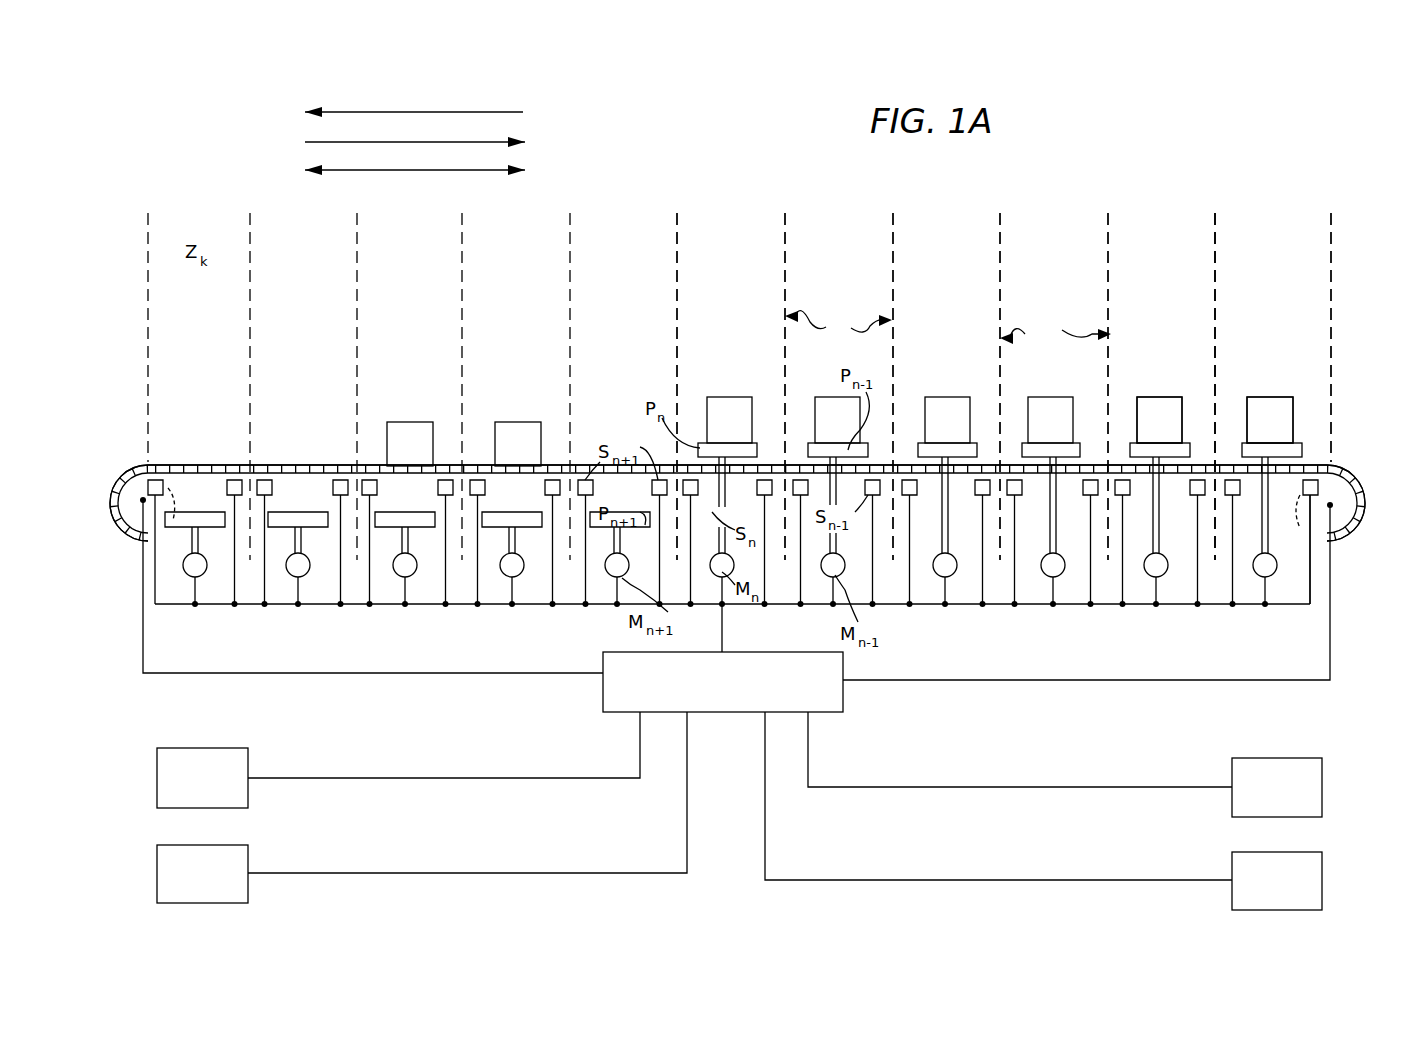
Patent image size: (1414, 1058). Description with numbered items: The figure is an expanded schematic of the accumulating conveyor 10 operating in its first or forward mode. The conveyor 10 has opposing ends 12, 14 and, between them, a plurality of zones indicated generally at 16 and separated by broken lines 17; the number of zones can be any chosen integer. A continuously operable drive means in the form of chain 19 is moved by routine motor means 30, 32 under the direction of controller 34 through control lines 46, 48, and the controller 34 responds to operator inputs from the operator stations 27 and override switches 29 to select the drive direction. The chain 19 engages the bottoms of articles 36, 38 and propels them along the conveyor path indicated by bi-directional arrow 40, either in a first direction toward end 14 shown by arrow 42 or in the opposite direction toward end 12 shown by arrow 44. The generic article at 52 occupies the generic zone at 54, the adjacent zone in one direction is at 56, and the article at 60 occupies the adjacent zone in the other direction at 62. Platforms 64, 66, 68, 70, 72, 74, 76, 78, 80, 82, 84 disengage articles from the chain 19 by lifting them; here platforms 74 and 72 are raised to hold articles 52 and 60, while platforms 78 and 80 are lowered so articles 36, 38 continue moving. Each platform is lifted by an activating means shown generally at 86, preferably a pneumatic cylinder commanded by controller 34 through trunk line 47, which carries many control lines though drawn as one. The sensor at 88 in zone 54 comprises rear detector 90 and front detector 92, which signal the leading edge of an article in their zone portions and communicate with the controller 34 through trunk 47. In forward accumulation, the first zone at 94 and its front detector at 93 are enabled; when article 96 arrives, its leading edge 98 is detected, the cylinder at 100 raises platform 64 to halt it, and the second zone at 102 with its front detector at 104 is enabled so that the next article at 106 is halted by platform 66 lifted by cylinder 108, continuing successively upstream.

The accumulating conveyor 10 is at (797, 185).
The end 12 is at (112, 485).
The end 14 is at (1370, 484).
The zones 16 is at (963, 230).
The broken lines 17 is at (948, 327).
The chain 19 is at (310, 465).
The operator station 27 is at (157, 870).
The override switch 29 is at (157, 786).
The motor means 30 is at (135, 505).
The motor means 32 is at (1362, 520).
The controller 34 is at (843, 663).
The article 36 is at (407, 434).
The article 38 is at (517, 434).
The bi-directional arrow 40 is at (500, 170).
The arrow 42 is at (500, 142).
The arrow 44 is at (523, 112).
The control line 46 is at (393, 673).
The trunk line 47 is at (495, 604).
The control line 48 is at (1095, 680).
The article An 52 is at (727, 400).
The zone Zn 54 is at (751, 240).
The zone Zn+1 56 is at (635, 228).
The article An-1 60 is at (833, 400).
The zone Zn-1 62 is at (859, 236).
The platform P1 64 is at (1300, 450).
The platform P2 66 is at (1185, 452).
The platform P3 68 is at (1075, 452).
The platform 70 is at (948, 440).
The platform Pn-1 72 is at (862, 452).
The platform Pn 74 is at (706, 442).
The platform Pn+1 76 is at (617, 538).
The platform 78 is at (526, 518).
The platform 80 is at (416, 518).
The platform 82 is at (306, 518).
The platform Pk 84 is at (205, 518).
The activating means Mn 86 is at (715, 578).
The sensor Sn 88 is at (700, 490).
The detector DRn 90 is at (690, 497).
The detector DFn 92 is at (765, 480).
The detector DF1 93 is at (1308, 500).
The zone Z1 94 is at (1283, 243).
The article 96 is at (1265, 412).
The leading edge 98 is at (1304, 405).
The cylinder M1 100 is at (1265, 577).
The zone Z2 102 is at (1183, 337).
The detector DF2 104 is at (1197, 500).
The article A2 106 is at (1178, 429).
The cylinder 108 is at (1155, 575).